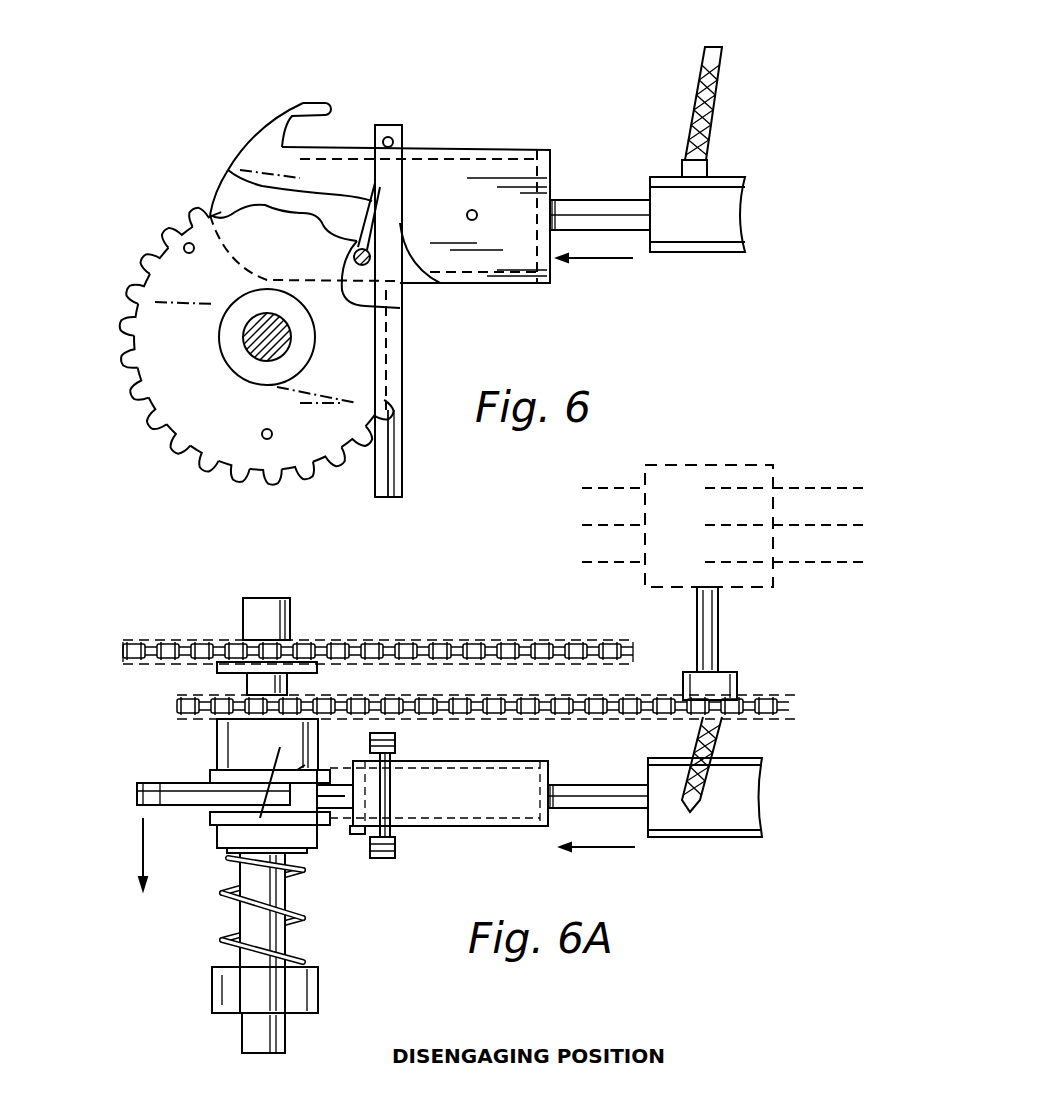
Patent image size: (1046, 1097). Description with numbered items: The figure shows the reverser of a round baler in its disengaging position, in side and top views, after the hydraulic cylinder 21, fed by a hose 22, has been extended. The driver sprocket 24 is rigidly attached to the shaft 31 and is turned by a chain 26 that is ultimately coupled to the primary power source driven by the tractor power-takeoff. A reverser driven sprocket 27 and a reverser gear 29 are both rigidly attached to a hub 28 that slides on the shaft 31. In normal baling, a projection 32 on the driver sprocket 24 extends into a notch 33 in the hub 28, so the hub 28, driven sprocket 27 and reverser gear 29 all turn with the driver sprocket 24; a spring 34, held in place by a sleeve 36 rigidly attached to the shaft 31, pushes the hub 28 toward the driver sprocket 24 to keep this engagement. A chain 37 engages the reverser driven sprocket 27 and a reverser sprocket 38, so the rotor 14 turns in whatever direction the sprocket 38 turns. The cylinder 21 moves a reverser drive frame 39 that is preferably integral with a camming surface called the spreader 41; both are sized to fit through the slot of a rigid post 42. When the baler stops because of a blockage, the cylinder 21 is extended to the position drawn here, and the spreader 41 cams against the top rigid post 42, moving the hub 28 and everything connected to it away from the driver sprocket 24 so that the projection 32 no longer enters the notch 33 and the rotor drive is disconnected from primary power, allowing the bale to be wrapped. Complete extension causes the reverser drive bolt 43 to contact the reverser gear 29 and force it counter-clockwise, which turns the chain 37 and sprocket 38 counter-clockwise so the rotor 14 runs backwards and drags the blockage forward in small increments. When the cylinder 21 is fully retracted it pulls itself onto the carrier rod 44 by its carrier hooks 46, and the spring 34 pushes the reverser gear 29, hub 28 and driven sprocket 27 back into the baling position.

In FIG. 6A, the rotor 14 is at (708, 470).
In FIG. 6, the hydraulic cylinder 21 is at (710, 233).
In FIG. 6A, the hydraulic cylinder 21 is at (720, 815).
In FIG. 6, the hose 22 is at (710, 108).
In FIG. 6A, the hose 22 is at (703, 748).
In FIG. 6, the driver sprocket 24 is at (157, 262).
In FIG. 6A, the driver sprocket 24 is at (160, 640).
In FIG. 6A, the chain 26 is at (410, 640).
In FIG. 6A, the reverser driven sprocket 27 is at (190, 712).
In FIG. 6, the hub 28 is at (232, 360).
In FIG. 6A, the hub 28 is at (235, 744).
In FIG. 6, the reverser gear 29 is at (172, 281).
In FIG. 6A, the reverser gear 29 is at (163, 805).
In FIG. 6, the shaft 31 is at (243, 332).
In FIG. 6A, the shaft 31 is at (270, 607).
In FIG. 6A, the projection 32 is at (285, 665).
In FIG. 6A, the notch 33 is at (240, 690).
In FIG. 6A, the spring 34 is at (228, 900).
In FIG. 6A, the sleeve 36 is at (310, 982).
In FIG. 6A, the chain 37 is at (580, 716).
In FIG. 6A, the reverser sprocket 38 is at (737, 700).
In FIG. 6, the reverser drive frame 39 is at (440, 167).
In FIG. 6A, the reverser drive frame 39 is at (505, 807).
In FIG. 6A, the spreader 41 is at (297, 770).
In FIG. 6, the rigid post 42 is at (388, 443).
In FIG. 6A, the rigid post 42 is at (396, 742).
In FIG. 6, the reverser drive bolt 43 is at (400, 308).
In FIG. 6A, the reverser drive bolt 43 is at (362, 834).
In FIG. 6, the carrier rod 44 is at (390, 138).
In FIG. 6A, the carrier rod 44 is at (393, 793).
In FIG. 6, the carrier hook 46 is at (327, 103).
In FIG. 6A, the carrier hook 46 is at (238, 773).